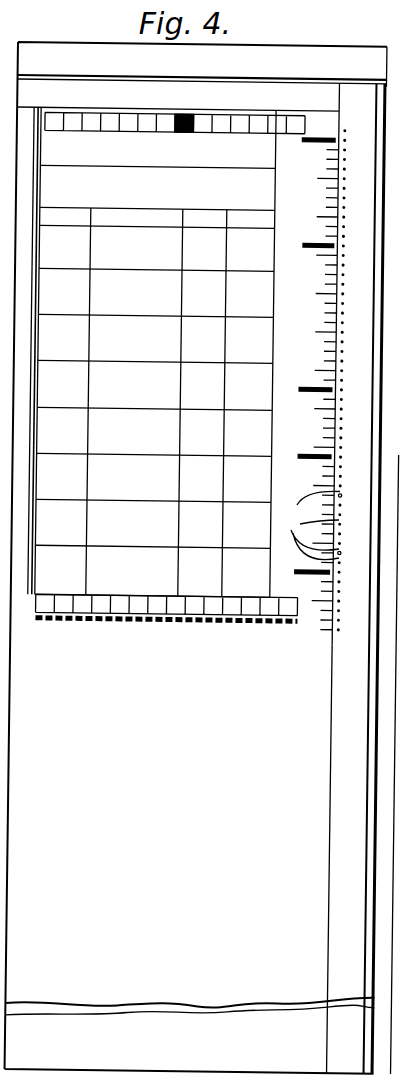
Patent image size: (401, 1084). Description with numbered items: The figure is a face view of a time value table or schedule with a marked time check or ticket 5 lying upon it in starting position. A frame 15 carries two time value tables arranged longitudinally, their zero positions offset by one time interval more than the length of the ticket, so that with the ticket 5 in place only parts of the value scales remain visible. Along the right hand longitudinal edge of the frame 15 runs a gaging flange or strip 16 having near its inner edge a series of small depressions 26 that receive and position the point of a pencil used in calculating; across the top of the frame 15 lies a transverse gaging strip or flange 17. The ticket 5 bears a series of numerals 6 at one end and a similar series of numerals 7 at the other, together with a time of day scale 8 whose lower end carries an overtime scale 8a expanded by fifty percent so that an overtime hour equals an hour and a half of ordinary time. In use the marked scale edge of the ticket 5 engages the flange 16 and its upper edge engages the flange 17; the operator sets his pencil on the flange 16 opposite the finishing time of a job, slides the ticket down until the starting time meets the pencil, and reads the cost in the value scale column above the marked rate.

The frame 15 is at (371, 43).
The transverse gaging strip or flange 17 is at (258, 98).
The series of numerals 6 is at (112, 107).
The ticket 5 is at (73, 517).
The time of day scale 8 is at (303, 275).
The overtime scale 8a is at (312, 622).
The perforations 26 is at (343, 389).
The gaging flange or strip 16 is at (300, 778).
The series of numerals 7 is at (185, 628).